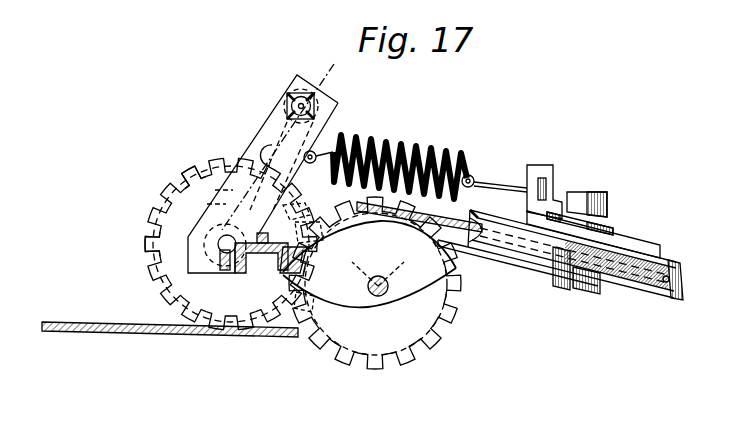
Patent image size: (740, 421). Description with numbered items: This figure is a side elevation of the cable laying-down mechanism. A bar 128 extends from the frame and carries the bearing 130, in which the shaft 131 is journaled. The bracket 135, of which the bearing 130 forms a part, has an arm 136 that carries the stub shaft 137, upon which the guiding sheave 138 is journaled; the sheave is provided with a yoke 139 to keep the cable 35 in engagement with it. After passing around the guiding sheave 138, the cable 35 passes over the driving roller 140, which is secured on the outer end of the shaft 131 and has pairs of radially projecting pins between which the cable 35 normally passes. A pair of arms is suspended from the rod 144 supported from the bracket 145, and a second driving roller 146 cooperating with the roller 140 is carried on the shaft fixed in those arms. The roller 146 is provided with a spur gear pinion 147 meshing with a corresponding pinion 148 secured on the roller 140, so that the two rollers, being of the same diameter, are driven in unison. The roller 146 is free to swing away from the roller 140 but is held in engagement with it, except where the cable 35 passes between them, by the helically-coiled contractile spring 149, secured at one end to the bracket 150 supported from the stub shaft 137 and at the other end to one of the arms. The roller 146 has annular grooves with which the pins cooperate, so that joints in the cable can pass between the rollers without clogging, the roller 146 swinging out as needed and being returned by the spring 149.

The cable 35 is at (102, 330).
The bar 128 is at (272, 266).
The bearing 130 is at (377, 270).
The shaft 131 is at (380, 296).
The bracket 135 is at (330, 258).
The arm 136 is at (530, 278).
The stub shaft 137 is at (593, 205).
The guiding sheave 138 is at (623, 290).
The yoke 139 is at (647, 245).
The driving roller 140 is at (364, 367).
The rod 144 is at (316, 99).
The bracket 145 is at (166, 197).
The driving roller 146 is at (200, 178).
The spur gear pinion 147 is at (148, 251).
The pinion 148 is at (303, 303).
The helically-coiled contractile spring 149 is at (395, 140).
The bracket 150 is at (541, 168).